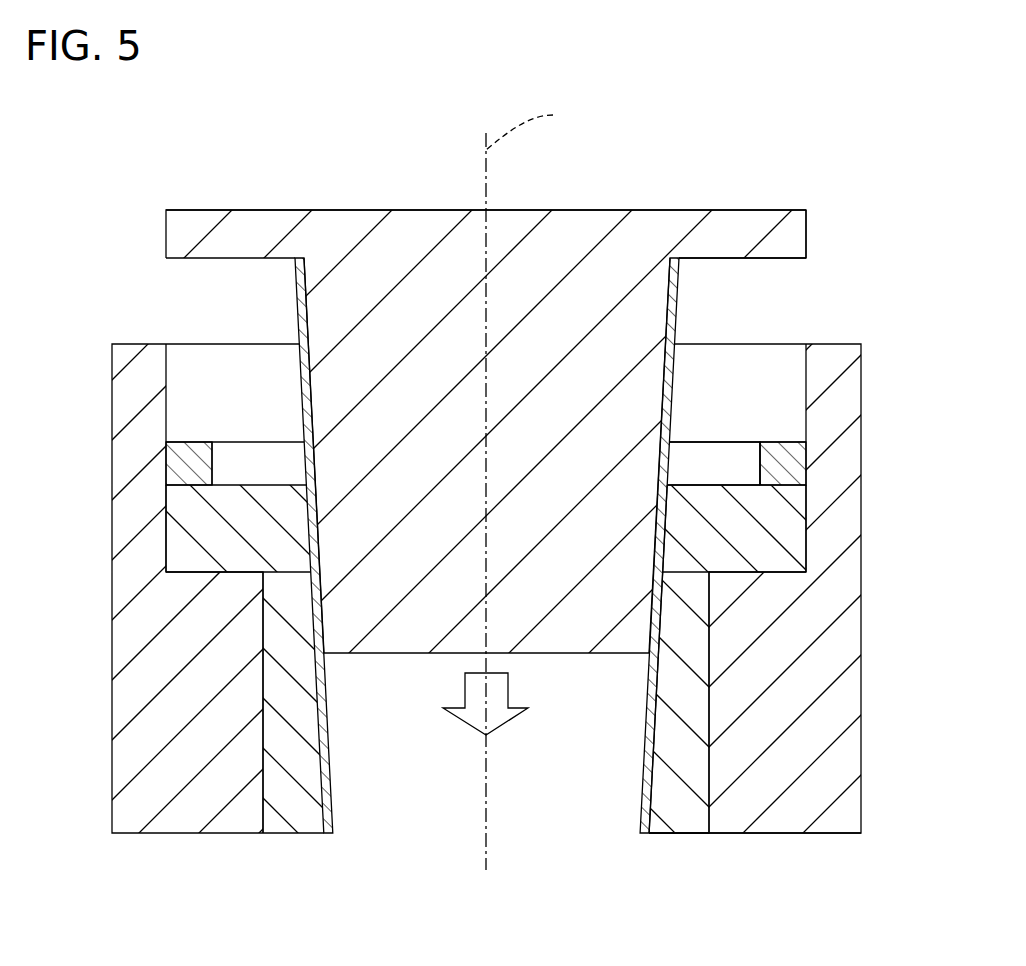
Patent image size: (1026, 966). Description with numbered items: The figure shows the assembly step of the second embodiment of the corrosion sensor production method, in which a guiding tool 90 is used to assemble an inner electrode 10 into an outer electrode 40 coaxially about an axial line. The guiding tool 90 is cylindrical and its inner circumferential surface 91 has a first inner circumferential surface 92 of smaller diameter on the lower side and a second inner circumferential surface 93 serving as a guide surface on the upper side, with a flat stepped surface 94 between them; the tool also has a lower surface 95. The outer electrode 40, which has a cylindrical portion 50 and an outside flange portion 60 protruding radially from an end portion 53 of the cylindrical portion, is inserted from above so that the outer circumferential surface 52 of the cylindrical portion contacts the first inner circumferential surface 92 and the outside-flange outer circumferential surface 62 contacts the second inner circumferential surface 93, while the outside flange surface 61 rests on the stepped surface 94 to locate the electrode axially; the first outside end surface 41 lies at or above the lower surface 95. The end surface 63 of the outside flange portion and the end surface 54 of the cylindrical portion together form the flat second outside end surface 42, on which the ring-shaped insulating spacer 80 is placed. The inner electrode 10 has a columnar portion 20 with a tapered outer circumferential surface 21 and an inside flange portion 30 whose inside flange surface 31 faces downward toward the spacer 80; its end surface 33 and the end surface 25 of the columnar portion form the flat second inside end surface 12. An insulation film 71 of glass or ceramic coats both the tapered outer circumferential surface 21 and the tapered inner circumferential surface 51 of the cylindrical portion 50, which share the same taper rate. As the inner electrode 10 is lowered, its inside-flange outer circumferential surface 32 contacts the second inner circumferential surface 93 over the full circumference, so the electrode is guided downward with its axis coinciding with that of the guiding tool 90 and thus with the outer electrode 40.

The inner electrode 10 is at (513, 483).
The second inside end surface 12 is at (513, 483).
The columnar portion 20 is at (556, 598).
The tapered outer circumferential surface 21 is at (663, 393).
The end surface of the columnar portion 25 is at (530, 210).
The inside flange portion 30 is at (750, 233).
The inside flange surface 31 is at (778, 262).
The inside-flange outer circumferential surface 32 is at (806, 230).
The end surface of the inside flange portion 33 is at (707, 216).
The outer electrode 40 is at (715, 741).
The first outside end surface 41 is at (675, 835).
The second outside end surface 42 is at (791, 480).
The cylindrical portion 50 is at (687, 765).
The tapered inner circumferential surface 51 is at (650, 710).
The outer circumferential surface of the cylindrical portion 52 is at (713, 800).
The end portion of the cylindrical portion 53 is at (683, 528).
The end surface of the cylindrical portion 54 is at (695, 473).
The outside flange portion 60 is at (780, 527).
The outside flange surface 61 is at (760, 572).
The outside-flange outer circumferential surface 62 is at (808, 547).
The end surface of the outside flange portion 63 is at (747, 485).
The insulation film 71 is at (673, 372).
The spacer 80 is at (183, 463).
The guiding tool 90 is at (100, 718).
The inner circumferential surface 91 is at (272, 758).
The first inner circumferential surface 92 is at (280, 793).
The second inner circumferential surface 93 is at (176, 540).
The stepped surface 94 is at (197, 560).
The lower surface 95 is at (808, 834).